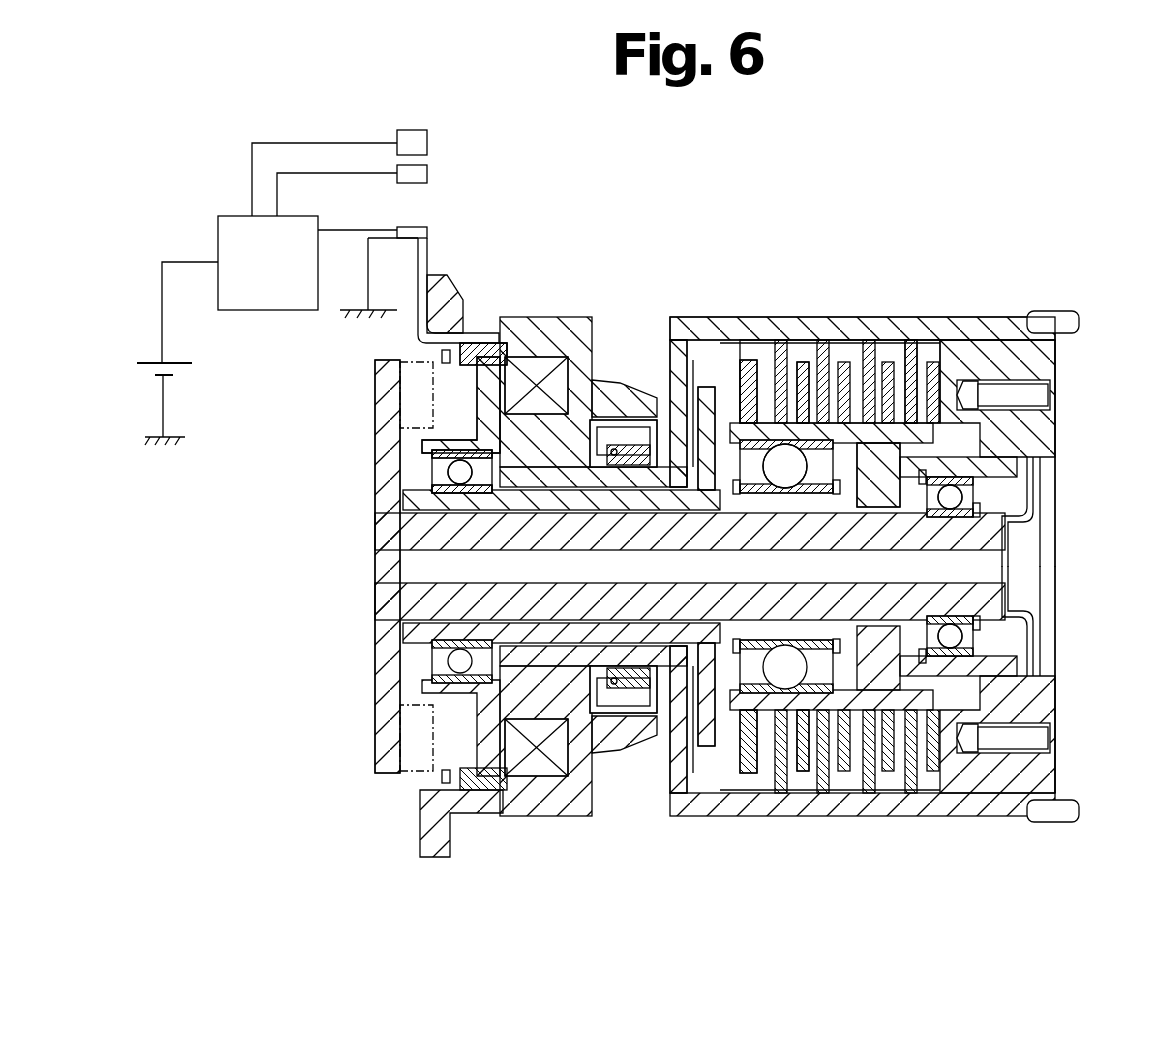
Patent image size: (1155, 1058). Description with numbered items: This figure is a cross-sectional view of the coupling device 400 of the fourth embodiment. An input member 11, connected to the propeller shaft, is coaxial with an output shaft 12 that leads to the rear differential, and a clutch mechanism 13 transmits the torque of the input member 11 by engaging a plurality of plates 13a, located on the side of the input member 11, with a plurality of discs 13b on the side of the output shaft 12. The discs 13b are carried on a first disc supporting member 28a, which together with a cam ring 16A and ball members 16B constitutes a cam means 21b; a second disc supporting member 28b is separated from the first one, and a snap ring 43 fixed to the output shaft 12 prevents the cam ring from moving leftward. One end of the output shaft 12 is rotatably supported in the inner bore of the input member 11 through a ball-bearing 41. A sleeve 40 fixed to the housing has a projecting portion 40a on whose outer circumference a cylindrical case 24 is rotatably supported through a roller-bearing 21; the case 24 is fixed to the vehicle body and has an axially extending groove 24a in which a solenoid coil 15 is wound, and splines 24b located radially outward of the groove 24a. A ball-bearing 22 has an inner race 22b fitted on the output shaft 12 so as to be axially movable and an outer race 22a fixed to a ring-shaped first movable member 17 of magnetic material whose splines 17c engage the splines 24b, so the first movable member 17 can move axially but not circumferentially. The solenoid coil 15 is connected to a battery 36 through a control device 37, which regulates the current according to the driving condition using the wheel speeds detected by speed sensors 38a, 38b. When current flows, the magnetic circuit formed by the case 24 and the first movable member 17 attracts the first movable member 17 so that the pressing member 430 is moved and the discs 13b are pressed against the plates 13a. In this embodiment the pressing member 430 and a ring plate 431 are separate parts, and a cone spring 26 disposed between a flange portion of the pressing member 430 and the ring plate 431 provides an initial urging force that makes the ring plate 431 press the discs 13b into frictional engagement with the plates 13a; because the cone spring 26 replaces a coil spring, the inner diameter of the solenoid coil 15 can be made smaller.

The input member 11 is at (1060, 440).
The output shaft 12 is at (382, 624).
The clutch mechanism 13 is at (866, 316).
The plates 13a is at (830, 338).
The discs 13b is at (903, 338).
The solenoid coil 15 is at (538, 365).
The cam ring 16A is at (762, 778).
The ball members 16B is at (807, 783).
The first movable member 17 is at (486, 386).
The splines 17c is at (483, 347).
The roller-bearing 21 is at (570, 452).
The cam means 21b is at (843, 497).
The ball-bearing 22 is at (447, 478).
The outer race 22a is at (430, 470).
The inner race 22b is at (428, 492).
The case 24 is at (450, 310).
The groove 24a is at (560, 772).
The splines 24b is at (423, 787).
The cone spring 26 is at (722, 338).
The first disc supporting member 28a is at (749, 495).
The second disc supporting member 28b is at (868, 492).
The battery 36 is at (152, 356).
The control device 37 is at (232, 232).
The speed sensor 38a is at (422, 145).
The speed sensor 38b is at (422, 173).
The sleeve 40 is at (675, 758).
The projecting portion 40a is at (598, 665).
The ball-bearing 41 is at (983, 632).
The snap ring 43 is at (730, 630).
The coupling device 400 is at (737, 212).
The pressing member 430 is at (690, 338).
The ring plate 431 is at (758, 338).